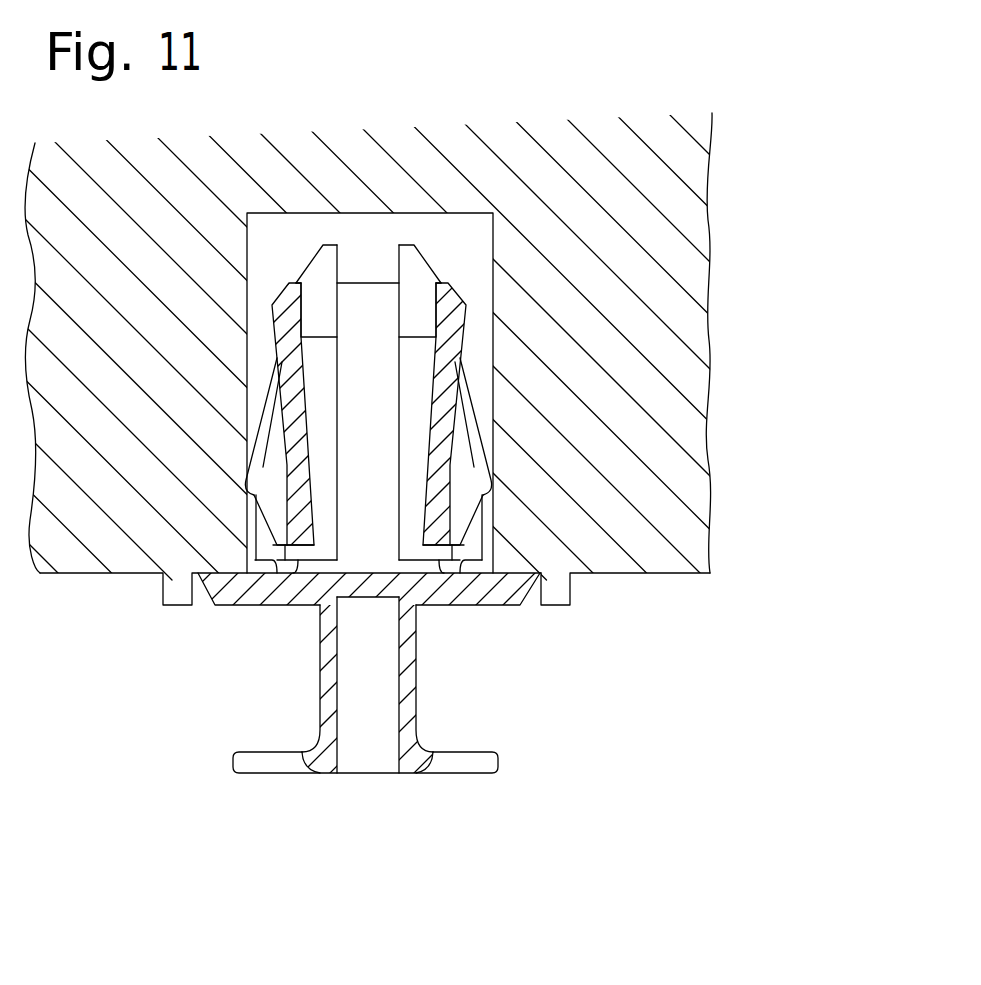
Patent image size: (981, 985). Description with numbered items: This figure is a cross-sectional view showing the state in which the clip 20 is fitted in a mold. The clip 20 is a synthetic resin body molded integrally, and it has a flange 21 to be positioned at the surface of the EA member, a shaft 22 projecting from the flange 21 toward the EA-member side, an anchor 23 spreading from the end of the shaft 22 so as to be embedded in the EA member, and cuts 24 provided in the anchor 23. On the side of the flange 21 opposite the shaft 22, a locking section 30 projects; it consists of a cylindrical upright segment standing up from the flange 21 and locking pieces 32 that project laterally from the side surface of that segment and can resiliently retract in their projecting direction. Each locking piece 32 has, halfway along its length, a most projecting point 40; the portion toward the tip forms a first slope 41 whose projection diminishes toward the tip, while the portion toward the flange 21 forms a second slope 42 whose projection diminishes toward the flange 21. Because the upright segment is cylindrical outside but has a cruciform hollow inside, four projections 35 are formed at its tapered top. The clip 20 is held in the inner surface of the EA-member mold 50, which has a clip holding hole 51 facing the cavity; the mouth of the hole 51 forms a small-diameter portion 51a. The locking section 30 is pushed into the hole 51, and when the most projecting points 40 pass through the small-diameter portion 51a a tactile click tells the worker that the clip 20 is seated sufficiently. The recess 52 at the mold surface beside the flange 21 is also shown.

The clip 20 is at (357, 771).
The flange 21 is at (477, 607).
The shaft 22 is at (320, 667).
The anchor 23 is at (466, 776).
The cuts 24 is at (290, 756).
The locking section 30 is at (436, 351).
The locking pieces 32 is at (476, 405).
The projections 35 is at (428, 256).
The most projecting point 40 is at (246, 483).
The first slope 41 is at (262, 407).
The second slope 42 is at (256, 522).
The EA-member mold 50 is at (490, 403).
The clip holding hole 51 is at (495, 262).
The small-diameter portion 51a is at (483, 545).
The recess 52 is at (553, 607).